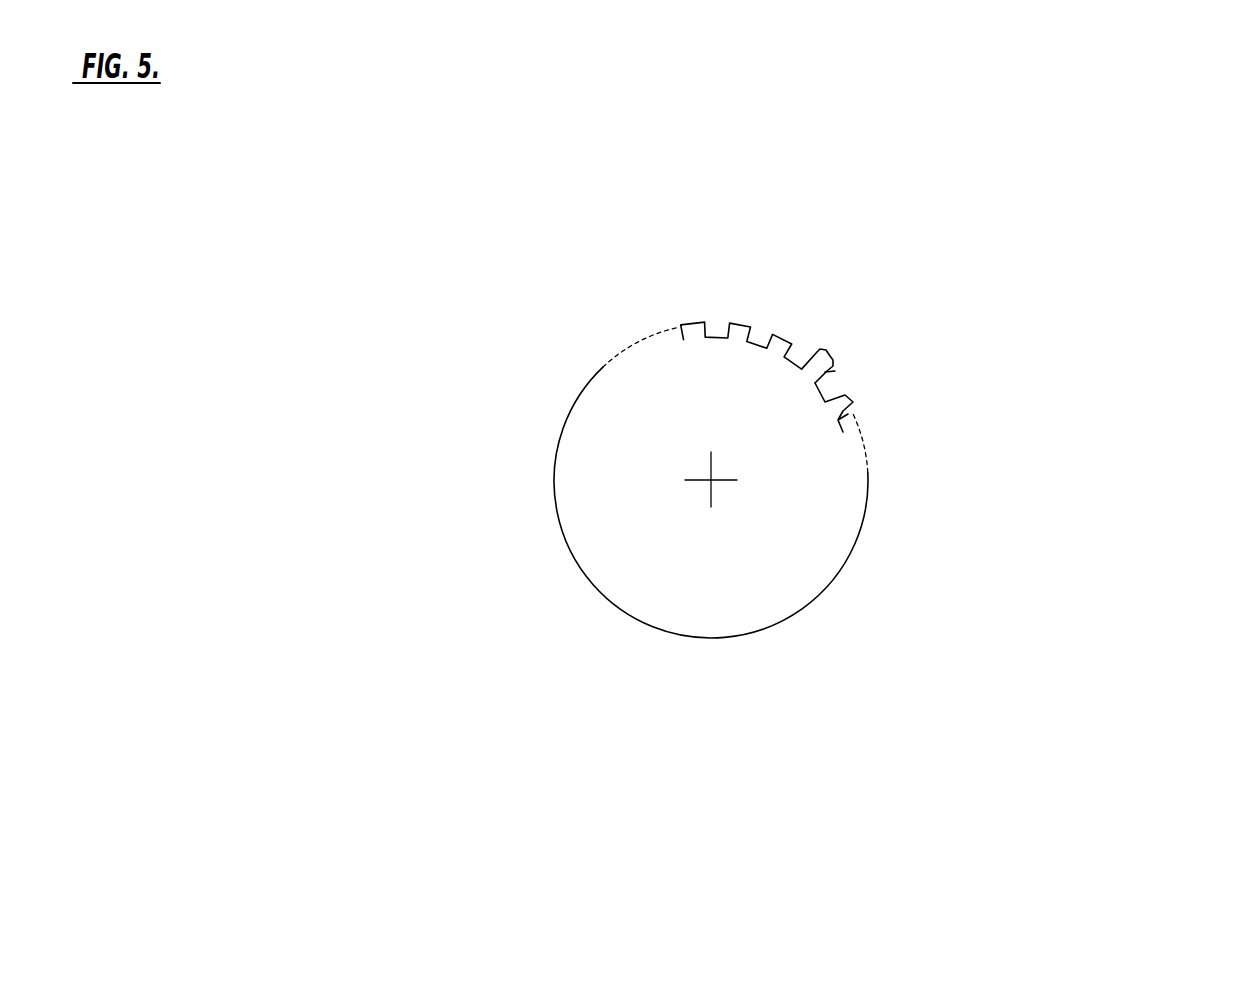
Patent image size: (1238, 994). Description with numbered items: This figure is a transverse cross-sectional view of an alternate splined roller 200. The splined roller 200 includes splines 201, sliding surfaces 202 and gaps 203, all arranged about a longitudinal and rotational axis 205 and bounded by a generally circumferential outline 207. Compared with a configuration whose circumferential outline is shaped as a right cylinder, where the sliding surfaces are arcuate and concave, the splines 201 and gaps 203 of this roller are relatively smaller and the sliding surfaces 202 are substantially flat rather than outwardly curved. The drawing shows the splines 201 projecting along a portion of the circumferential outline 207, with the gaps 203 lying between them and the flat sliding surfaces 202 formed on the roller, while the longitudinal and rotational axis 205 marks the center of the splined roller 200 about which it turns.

The splined roller 200 is at (625, 560).
The splines 201 is at (850, 405).
The sliding surfaces 202 is at (832, 360).
The gaps 203 is at (828, 388).
The longitudinal and rotational axis 205 is at (713, 484).
The circumferential outline 207 is at (635, 338).